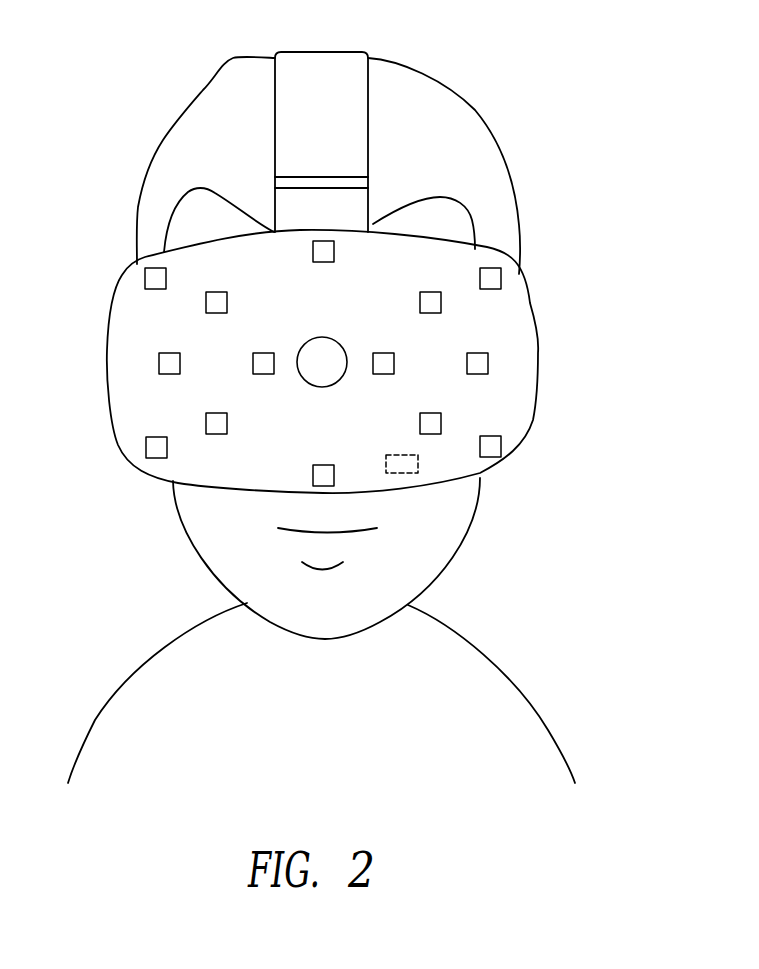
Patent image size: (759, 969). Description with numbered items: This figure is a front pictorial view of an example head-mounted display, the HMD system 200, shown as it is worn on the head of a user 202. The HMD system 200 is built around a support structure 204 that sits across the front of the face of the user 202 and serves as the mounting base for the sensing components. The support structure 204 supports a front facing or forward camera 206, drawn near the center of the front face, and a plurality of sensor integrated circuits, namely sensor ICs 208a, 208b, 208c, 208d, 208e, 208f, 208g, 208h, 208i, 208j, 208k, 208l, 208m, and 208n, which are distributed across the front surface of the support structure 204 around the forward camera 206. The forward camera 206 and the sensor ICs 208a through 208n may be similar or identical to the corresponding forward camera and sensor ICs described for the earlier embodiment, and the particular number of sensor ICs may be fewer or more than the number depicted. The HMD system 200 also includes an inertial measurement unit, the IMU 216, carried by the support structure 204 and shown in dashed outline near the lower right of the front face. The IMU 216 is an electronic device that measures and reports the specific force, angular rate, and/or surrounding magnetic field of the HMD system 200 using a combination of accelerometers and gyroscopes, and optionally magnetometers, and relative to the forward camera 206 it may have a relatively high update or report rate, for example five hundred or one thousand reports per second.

The HMD system 200 is at (618, 95).
The user 202 is at (513, 670).
The support structure 204 is at (539, 360).
The forward camera 206 is at (306, 380).
The sensor IC 208a is at (166, 278).
The sensor IC 208b is at (170, 353).
The sensor IC 208c is at (157, 437).
The sensor IC 208d is at (227, 302).
The sensor IC 208e is at (217, 413).
The sensor IC 208f is at (261, 353).
The sensor IC 208g is at (333, 251).
The sensor IC 208h is at (323, 465).
The sensor IC 208i is at (385, 353).
The sensor IC 208j is at (420, 302).
The sensor IC 208k is at (430, 413).
The sensor IC 208l is at (480, 278).
The sensor IC 208m is at (478, 353).
The sensor IC 208n is at (490, 436).
The inertial measurement unit (IMU) 216 is at (418, 462).